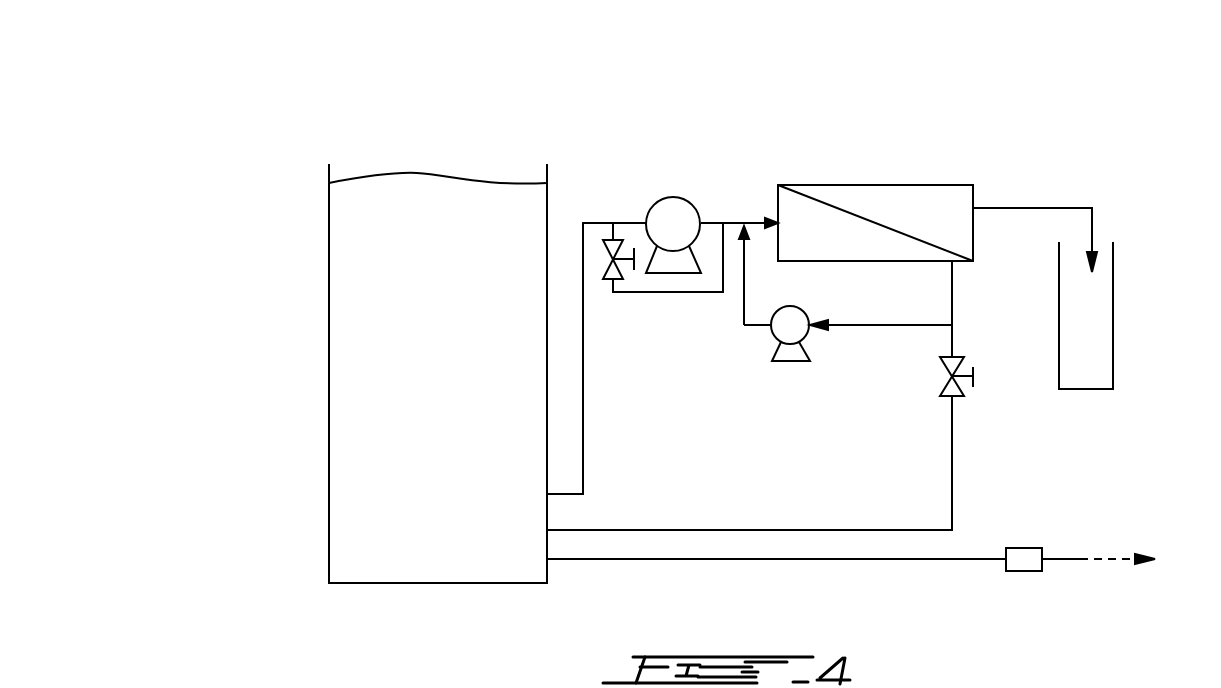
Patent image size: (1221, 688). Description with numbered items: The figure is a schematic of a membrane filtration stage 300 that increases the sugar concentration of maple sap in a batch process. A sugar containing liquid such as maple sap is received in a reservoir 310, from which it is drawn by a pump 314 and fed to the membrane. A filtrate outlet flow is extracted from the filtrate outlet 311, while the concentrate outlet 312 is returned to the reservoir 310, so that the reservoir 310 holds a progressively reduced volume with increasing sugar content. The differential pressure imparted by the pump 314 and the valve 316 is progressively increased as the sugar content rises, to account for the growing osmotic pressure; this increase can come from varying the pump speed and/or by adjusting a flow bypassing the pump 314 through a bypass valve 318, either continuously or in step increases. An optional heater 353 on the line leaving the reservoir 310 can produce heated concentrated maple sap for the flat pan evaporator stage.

The membrane filtration stage 300 is at (949, 111).
The reservoir 310 is at (329, 280).
The filtrate outlet 311 is at (1060, 208).
The concentrate outlet 312 is at (952, 500).
The pump 314 is at (685, 197).
The valve 316 is at (940, 383).
The bypass valve 318 is at (619, 282).
The heater 353 is at (1027, 572).